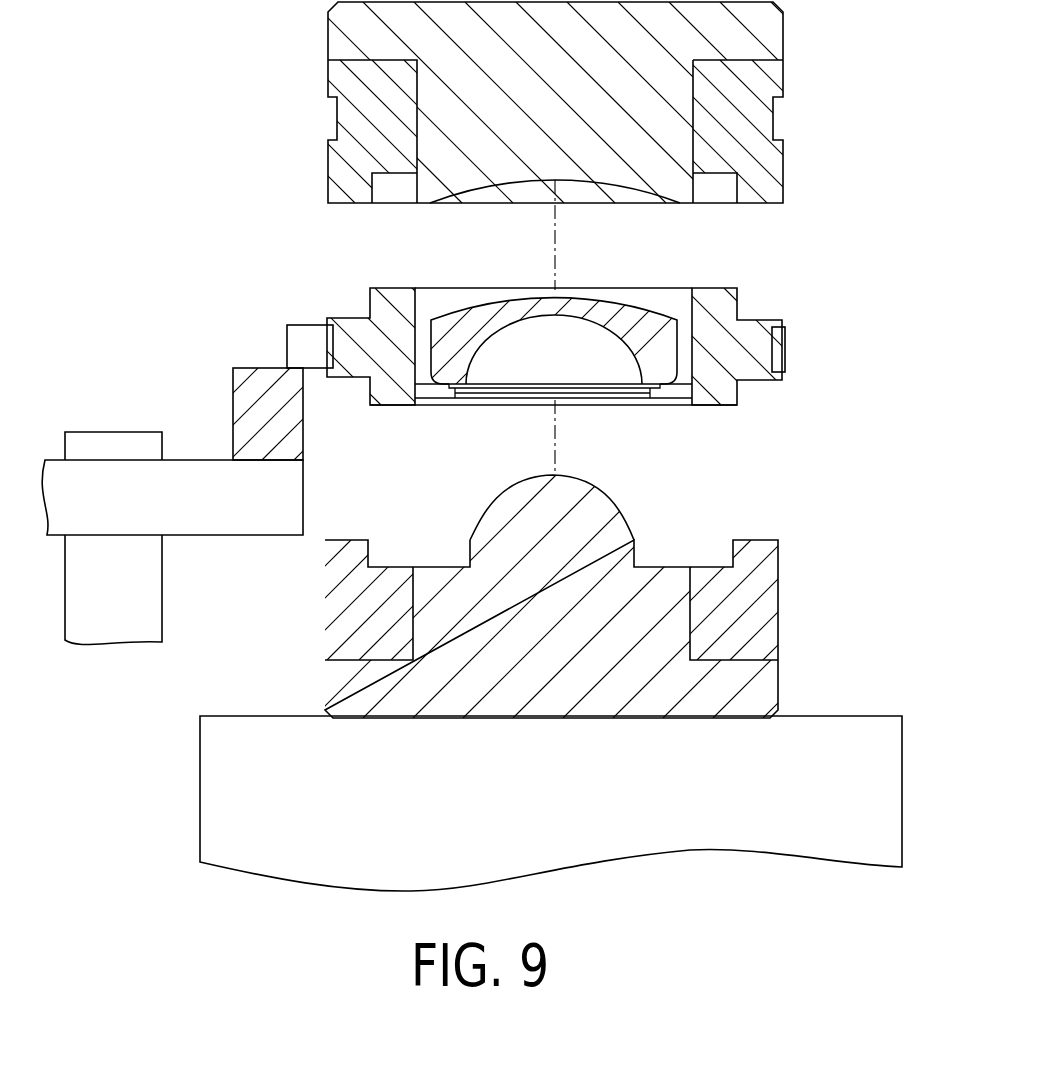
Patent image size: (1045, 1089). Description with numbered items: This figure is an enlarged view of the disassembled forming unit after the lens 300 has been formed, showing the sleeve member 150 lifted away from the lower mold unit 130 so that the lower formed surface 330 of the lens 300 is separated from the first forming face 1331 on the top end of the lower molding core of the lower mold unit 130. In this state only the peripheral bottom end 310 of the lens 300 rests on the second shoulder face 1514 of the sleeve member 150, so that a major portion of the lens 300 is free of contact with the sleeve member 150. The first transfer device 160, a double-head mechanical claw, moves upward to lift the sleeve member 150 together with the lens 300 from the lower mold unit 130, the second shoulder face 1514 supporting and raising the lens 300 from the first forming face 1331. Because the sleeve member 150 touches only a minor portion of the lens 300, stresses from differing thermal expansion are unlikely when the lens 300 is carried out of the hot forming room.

The lower mold unit 130 is at (618, 591).
The first forming face 1331 is at (597, 485).
The sleeve member 150 is at (588, 364).
The second shoulder face 1514 is at (662, 388).
The first transfer device 160 is at (185, 460).
The lens 300 is at (651, 357).
The peripheral bottom end 310 is at (675, 316).
The lower formed surface 330 is at (535, 316).